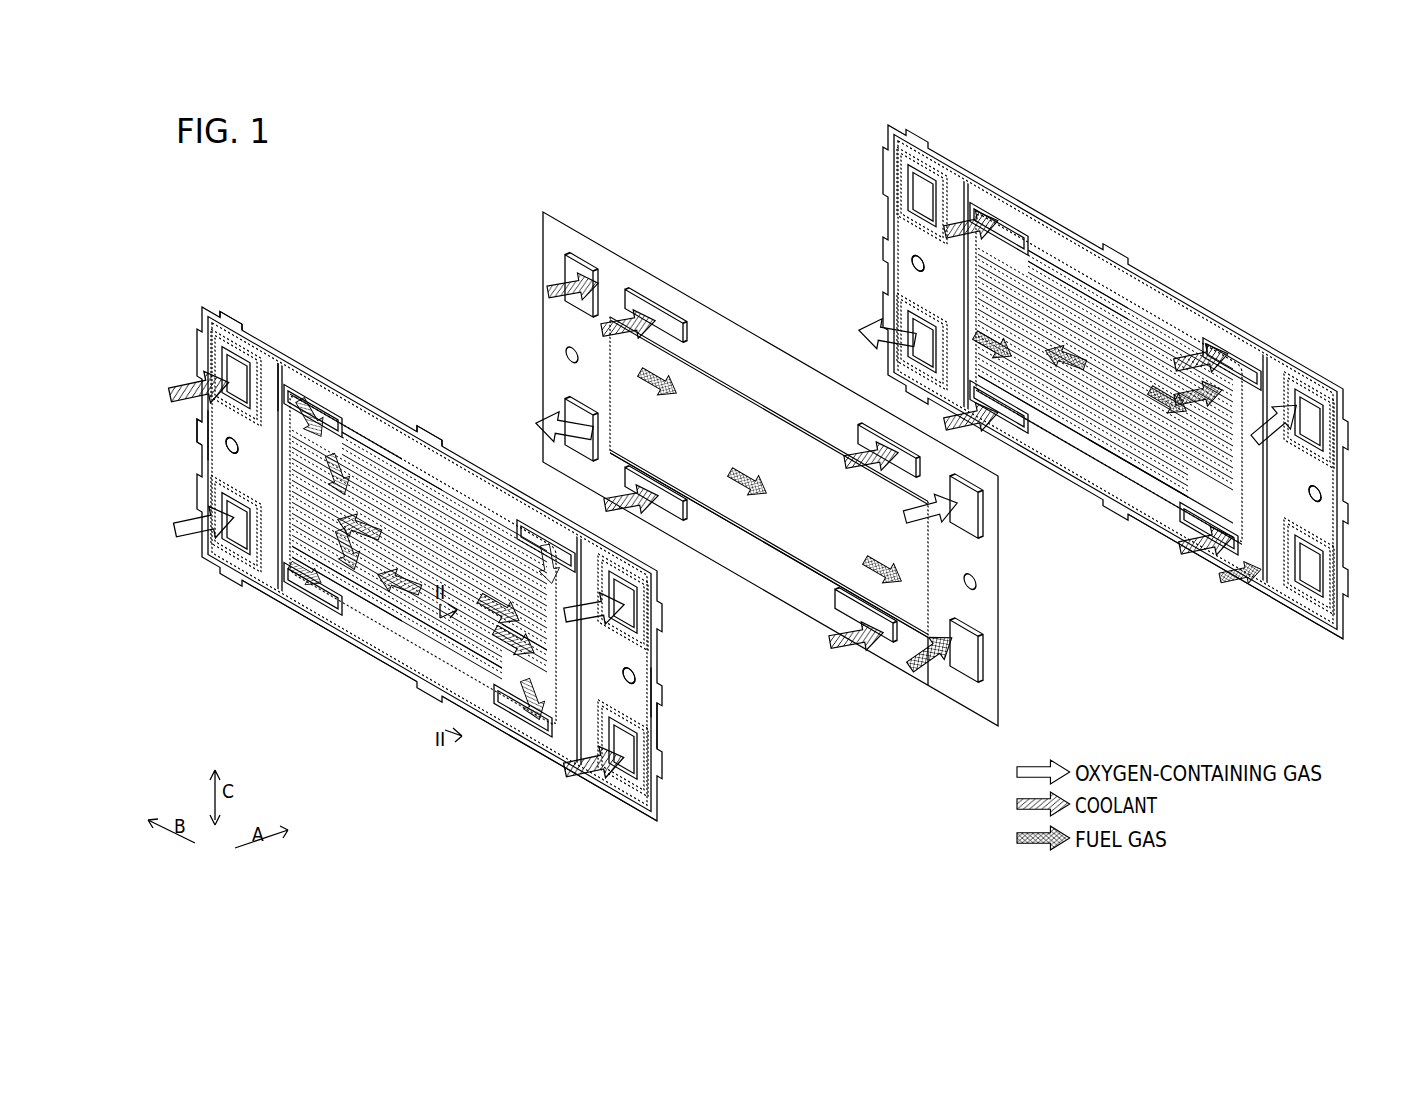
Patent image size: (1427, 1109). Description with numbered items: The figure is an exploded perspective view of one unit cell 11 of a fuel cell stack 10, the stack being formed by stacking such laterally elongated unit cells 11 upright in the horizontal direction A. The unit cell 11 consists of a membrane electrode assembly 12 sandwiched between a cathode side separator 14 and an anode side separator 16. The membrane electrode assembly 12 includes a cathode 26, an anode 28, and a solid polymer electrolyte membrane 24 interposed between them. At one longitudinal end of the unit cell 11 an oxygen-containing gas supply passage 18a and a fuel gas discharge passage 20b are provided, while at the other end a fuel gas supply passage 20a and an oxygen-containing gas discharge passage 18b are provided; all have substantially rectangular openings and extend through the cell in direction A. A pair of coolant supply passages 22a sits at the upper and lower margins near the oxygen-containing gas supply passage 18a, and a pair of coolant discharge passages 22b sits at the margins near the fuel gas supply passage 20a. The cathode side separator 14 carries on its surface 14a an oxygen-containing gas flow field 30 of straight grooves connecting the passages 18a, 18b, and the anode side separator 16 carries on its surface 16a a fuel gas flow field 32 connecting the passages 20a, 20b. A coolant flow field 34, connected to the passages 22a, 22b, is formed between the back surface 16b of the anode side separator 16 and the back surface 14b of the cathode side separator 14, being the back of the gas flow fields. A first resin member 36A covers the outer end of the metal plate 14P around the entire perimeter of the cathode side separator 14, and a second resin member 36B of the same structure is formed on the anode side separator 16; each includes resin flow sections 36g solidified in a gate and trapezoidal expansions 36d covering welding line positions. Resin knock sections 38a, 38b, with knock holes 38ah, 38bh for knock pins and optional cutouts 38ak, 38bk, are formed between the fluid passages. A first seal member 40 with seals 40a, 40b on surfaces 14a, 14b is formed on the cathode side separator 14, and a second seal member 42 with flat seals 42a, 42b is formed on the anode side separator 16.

The fuel cell stack 10 is at (323, 189).
The unit cell 11 is at (290, 189).
The membrane electrode assembly 12 is at (543, 211).
The cathode side separator 14 is at (884, 124).
The metal plate 14P is at (1116, 494).
The surface 14a is at (1147, 528).
The surface 14b is at (1153, 498).
The anode side separator 16 is at (211, 302).
The surface 16a is at (490, 690).
The surface 16b is at (482, 695).
The oxygen-containing gas supply passage 18a is at (635, 600).
The oxygen-containing gas discharge passage 18b is at (224, 572).
The fuel gas supply passage 20a is at (222, 336).
The fuel gas discharge passage 20b is at (640, 748).
The coolant supply passage 22a is at (540, 522).
The coolant discharge passage 22b is at (298, 370).
The solid polymer electrolyte membrane 24 is at (960, 692).
The cathode 26 is at (712, 360).
The anode 28 is at (805, 562).
The oxygen-containing gas flow field 30 is at (1085, 494).
The fuel gas flow field 32 is at (492, 522).
The coolant flow field 34 is at (402, 665).
The first resin member 36A is at (1085, 504).
The second resin member 36B is at (405, 417).
The expansion 36d is at (237, 304).
The resin flow section 36g is at (333, 376).
The resin knock section 38a is at (630, 680).
The knock hole 38ah is at (642, 668).
The cutout 38ak is at (662, 698).
The resin knock section 38b is at (245, 447).
The knock hole 38bh is at (228, 450).
The cutout 38bk is at (206, 432).
The first seal member 40 is at (1207, 290).
The seal 40a is at (1072, 272).
The seal 40b is at (1117, 300).
The second seal member 42 is at (382, 672).
The seal 42a is at (372, 648).
The seal 42b is at (370, 438).